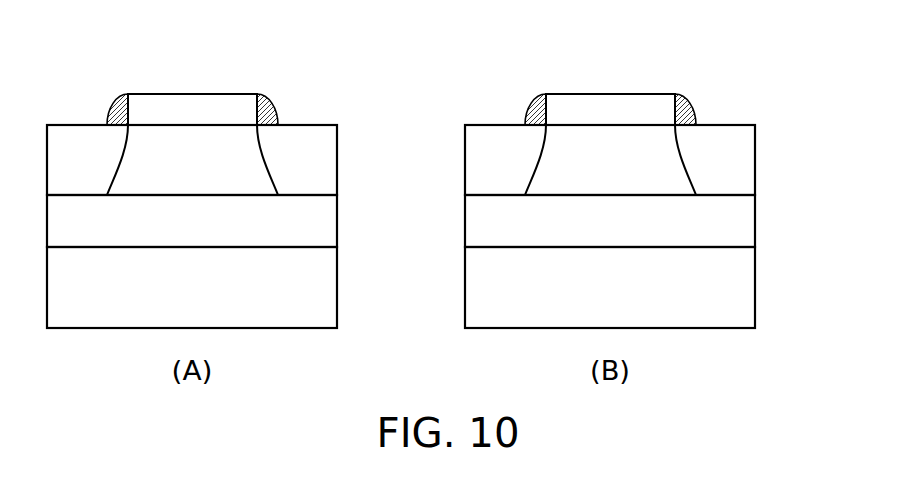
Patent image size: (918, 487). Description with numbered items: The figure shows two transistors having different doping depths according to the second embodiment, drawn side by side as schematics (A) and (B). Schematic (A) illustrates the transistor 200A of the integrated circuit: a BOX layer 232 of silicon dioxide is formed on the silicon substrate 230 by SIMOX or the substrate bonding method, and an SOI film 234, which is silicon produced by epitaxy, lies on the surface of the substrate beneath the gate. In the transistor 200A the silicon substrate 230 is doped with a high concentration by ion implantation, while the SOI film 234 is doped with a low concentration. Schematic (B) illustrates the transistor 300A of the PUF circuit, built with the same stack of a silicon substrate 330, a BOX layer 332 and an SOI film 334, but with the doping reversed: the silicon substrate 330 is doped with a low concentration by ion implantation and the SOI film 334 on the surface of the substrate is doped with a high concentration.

The transistor 200A is at (95, 77).
The silicon substrate 230 is at (337, 288).
The BOX layer 232 is at (337, 221).
The SOI film 234 is at (337, 153).
The transistor 300A is at (646, 168).
The silicon substrate 330 is at (656, 287).
The BOX layer 332 is at (656, 221).
The SOI film 334 is at (656, 160).